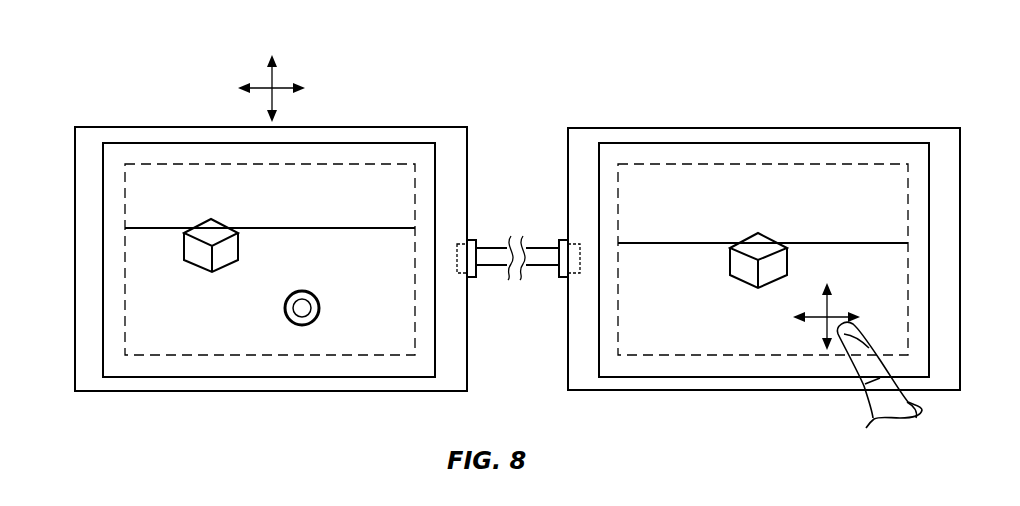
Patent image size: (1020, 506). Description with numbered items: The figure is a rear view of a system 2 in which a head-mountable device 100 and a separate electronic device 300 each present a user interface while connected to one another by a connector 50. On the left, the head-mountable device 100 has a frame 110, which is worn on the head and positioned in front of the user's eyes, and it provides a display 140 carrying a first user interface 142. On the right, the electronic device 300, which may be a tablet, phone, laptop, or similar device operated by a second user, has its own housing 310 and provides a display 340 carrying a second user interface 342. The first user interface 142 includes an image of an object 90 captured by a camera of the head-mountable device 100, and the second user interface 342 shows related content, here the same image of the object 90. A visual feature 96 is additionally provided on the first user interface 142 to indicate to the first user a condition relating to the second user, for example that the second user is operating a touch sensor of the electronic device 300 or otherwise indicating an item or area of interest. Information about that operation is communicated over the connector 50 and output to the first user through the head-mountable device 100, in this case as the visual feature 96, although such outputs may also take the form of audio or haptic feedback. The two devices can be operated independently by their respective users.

The system 2 is at (176, 68).
The head-mountable device 100 is at (52, 110).
The frame 110 is at (102, 127).
The display 140 is at (318, 143).
The first user interface 142 is at (362, 163).
The object 90 is at (195, 221).
The visual feature 96 is at (284, 314).
The connector 50 is at (490, 247).
The electronic device 300 is at (545, 110).
The housing of second device 310 is at (596, 128).
The display 340 is at (810, 143).
The second user interface 342 is at (855, 163).